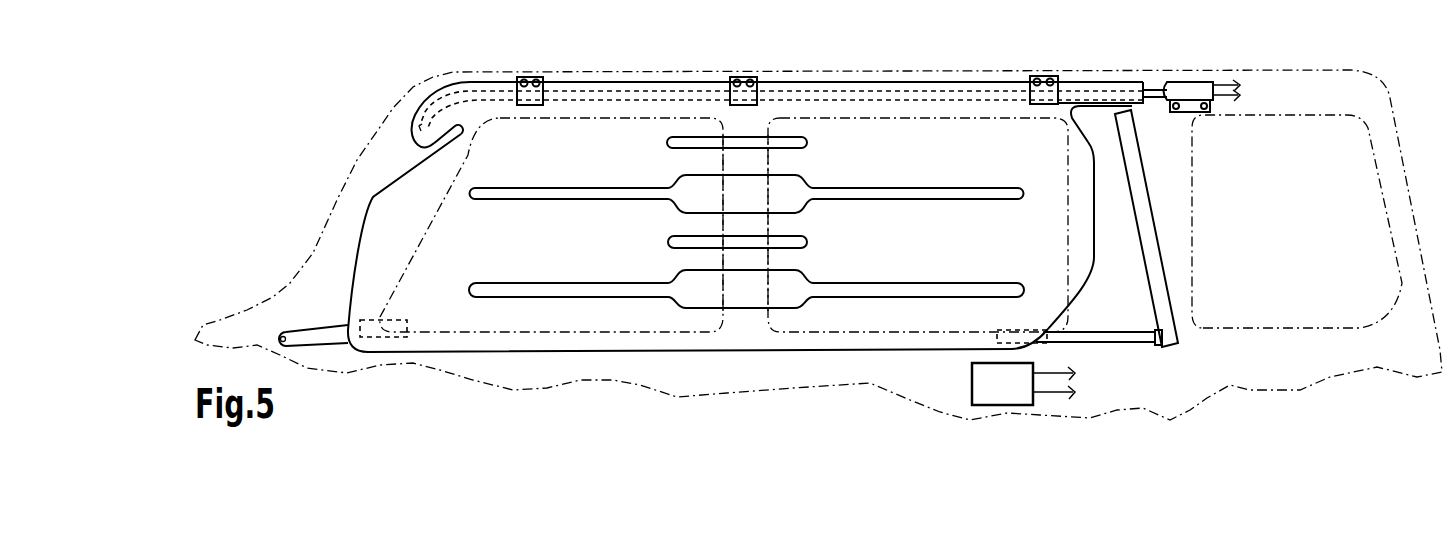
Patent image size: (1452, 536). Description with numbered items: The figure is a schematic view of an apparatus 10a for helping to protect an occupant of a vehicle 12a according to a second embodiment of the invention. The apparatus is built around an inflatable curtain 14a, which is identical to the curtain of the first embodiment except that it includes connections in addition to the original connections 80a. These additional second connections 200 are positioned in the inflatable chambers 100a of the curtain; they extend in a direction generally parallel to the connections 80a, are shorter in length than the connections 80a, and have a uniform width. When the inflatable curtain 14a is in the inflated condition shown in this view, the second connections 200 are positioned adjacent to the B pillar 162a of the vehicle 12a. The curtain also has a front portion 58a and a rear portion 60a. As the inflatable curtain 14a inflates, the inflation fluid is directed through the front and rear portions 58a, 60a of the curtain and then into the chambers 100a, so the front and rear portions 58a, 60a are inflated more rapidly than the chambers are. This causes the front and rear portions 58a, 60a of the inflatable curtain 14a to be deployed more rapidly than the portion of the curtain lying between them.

The apparatus for helping to protect an occupant 10a is at (376, 85).
The vehicle 12a is at (333, 129).
The inflatable curtain 14a is at (618, 318).
The front portion of the inflatable curtain 58a is at (385, 243).
The rear portion of the inflatable curtain 60a is at (1057, 223).
The connections 80a is at (950, 197).
The inflatable chambers 100a is at (640, 312).
The B pillar 162a is at (752, 225).
The second connections 200 is at (797, 143).